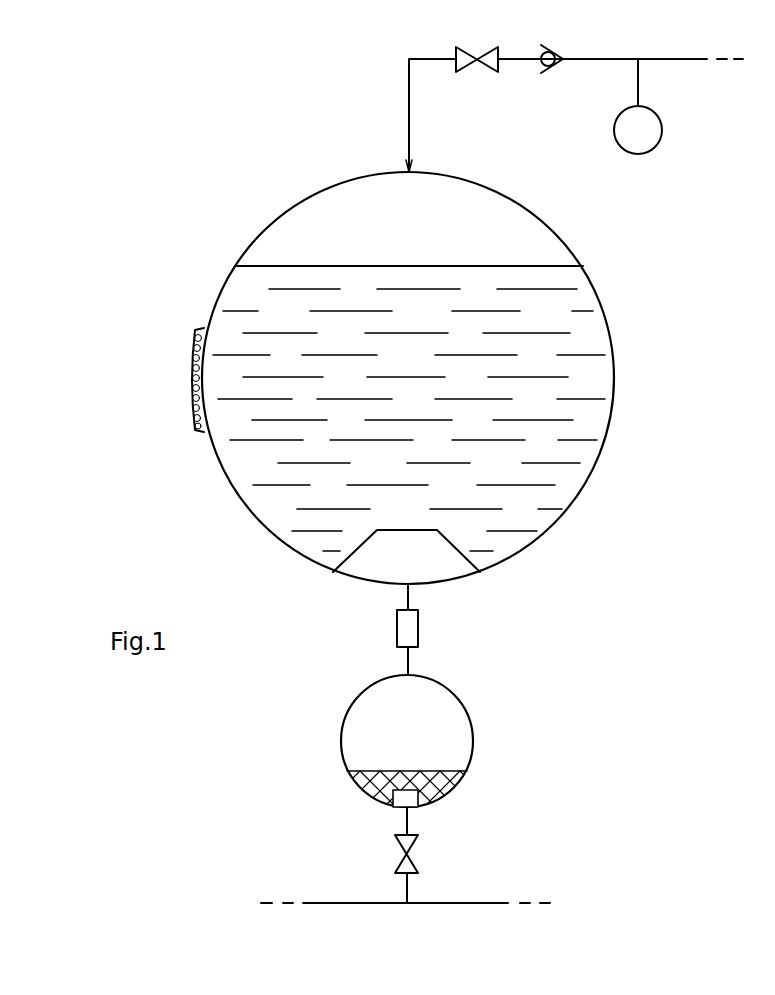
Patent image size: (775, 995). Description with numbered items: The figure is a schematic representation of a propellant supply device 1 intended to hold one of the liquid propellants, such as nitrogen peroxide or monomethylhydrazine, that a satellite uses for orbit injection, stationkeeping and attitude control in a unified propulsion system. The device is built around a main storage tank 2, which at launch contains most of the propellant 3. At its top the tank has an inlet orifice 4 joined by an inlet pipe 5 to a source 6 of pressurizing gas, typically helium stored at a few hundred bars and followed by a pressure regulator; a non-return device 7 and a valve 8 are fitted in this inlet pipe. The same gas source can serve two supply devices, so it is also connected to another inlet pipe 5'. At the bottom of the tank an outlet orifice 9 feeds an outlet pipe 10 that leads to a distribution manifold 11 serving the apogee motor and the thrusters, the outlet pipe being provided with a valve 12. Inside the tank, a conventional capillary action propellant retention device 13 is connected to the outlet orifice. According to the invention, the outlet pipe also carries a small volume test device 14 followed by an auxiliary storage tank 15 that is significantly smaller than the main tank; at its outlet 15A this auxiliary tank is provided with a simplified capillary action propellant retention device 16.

The propellant supply device 1 is at (168, 467).
The main storage tank 2 is at (598, 295).
The propellant 3 is at (245, 298).
The inlet orifice 4 is at (411, 170).
The inlet pipe 5 is at (527, 115).
The inlet pipe 5' is at (705, 84).
The source of pressurizing gas 6 is at (655, 148).
The non-return device 7 is at (553, 66).
The valve 8 is at (462, 72).
The outlet orifice 9 is at (403, 590).
The outlet pipe 10 is at (409, 665).
The distribution manifold 11 is at (485, 903).
The valve 12 is at (416, 855).
The capillary action propellant retention device 13 is at (428, 571).
The small volume test device 14 is at (397, 630).
The auxiliary storage tank 15 is at (470, 714).
The outlet 15A is at (405, 811).
The simplified capillary action propellant retention device 16 is at (375, 800).